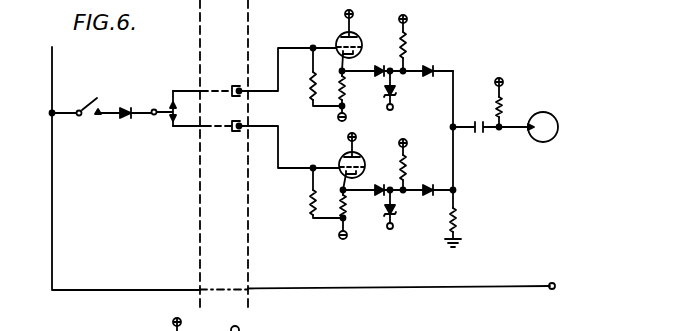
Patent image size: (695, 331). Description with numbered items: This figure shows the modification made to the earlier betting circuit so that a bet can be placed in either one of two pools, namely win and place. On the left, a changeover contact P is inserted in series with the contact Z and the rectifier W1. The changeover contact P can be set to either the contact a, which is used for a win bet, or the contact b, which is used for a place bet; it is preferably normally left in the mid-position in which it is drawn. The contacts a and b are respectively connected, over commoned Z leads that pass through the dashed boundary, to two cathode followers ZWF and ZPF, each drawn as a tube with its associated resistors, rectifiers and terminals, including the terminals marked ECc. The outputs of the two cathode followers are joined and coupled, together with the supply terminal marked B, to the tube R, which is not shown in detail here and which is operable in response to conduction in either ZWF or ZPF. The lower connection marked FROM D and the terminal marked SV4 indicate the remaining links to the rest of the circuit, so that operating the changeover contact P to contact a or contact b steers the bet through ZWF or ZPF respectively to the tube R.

The contact Z is at (86, 116).
The rectifier W1 is at (131, 103).
The changeover contact P is at (164, 108).
The contact a is at (254, 78).
The contact b is at (256, 142).
The cathode follower ZWF is at (326, 65).
The cathode follower ZPF is at (325, 186).
The control voltage terminal ECc is at (398, 153).
The supply voltage terminal B is at (505, 101).
The tube R is at (562, 137).
The input from D is at (572, 297).
The terminal SV4 is at (228, 324).